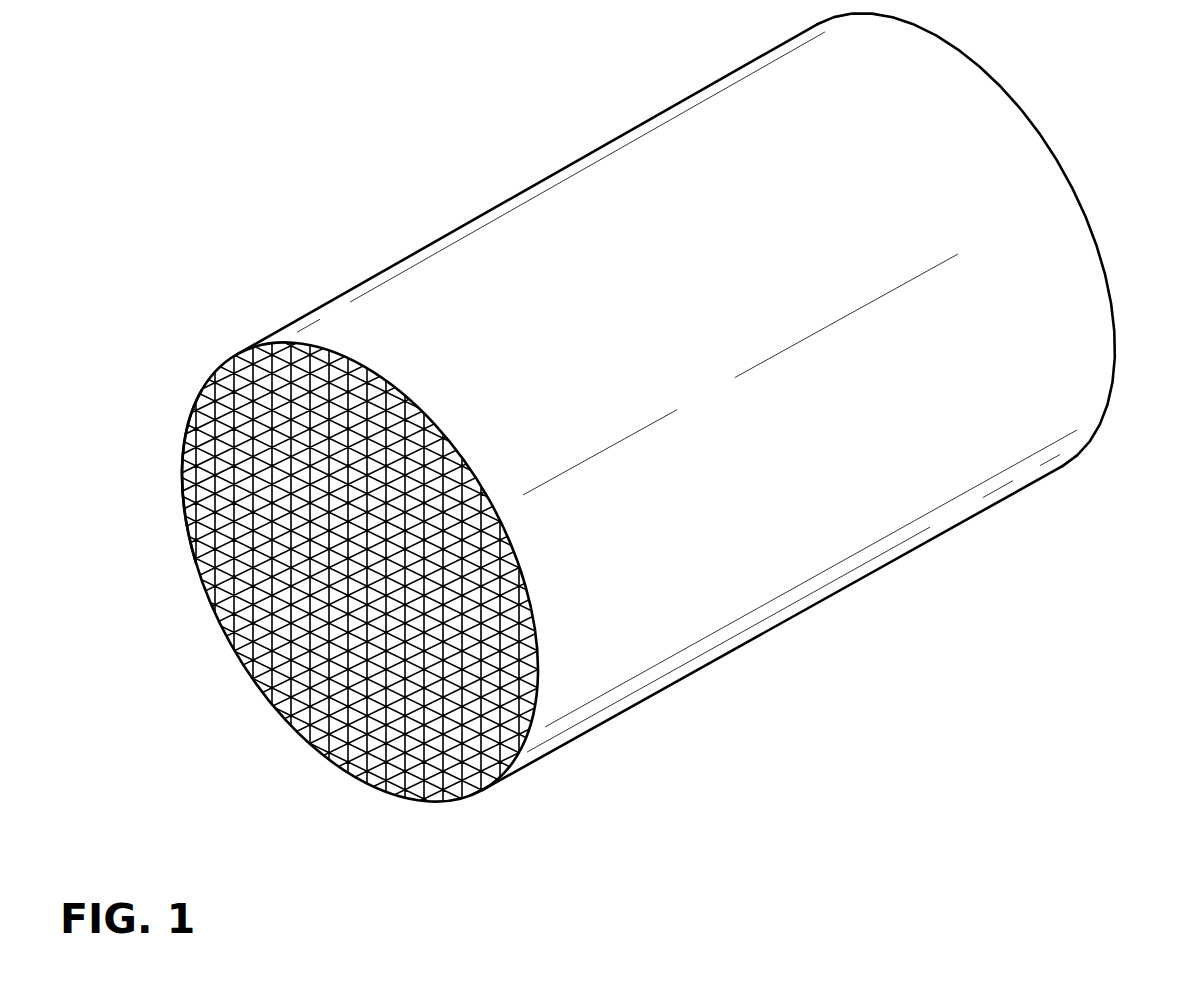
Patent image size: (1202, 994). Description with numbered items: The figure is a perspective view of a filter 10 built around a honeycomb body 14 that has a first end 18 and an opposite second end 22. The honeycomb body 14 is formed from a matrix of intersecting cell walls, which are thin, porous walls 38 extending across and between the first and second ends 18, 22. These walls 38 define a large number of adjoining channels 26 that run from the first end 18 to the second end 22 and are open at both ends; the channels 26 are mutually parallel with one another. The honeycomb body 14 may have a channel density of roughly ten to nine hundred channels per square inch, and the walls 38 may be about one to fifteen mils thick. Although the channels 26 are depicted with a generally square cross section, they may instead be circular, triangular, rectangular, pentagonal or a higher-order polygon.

The filter 10 is at (268, 233).
The honeycomb body 14 is at (465, 268).
The first end 18 is at (380, 816).
The second end 22 is at (1100, 204).
The channels 26 is at (306, 716).
The walls 38 is at (519, 767).